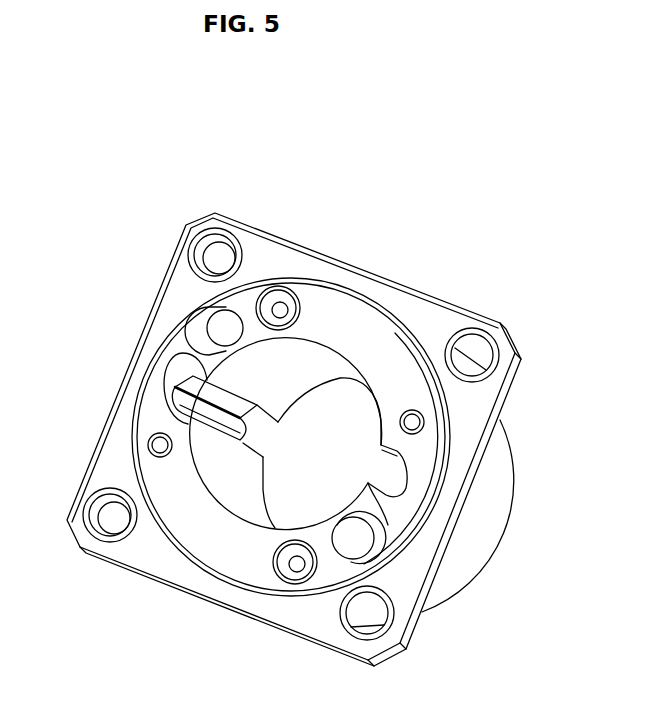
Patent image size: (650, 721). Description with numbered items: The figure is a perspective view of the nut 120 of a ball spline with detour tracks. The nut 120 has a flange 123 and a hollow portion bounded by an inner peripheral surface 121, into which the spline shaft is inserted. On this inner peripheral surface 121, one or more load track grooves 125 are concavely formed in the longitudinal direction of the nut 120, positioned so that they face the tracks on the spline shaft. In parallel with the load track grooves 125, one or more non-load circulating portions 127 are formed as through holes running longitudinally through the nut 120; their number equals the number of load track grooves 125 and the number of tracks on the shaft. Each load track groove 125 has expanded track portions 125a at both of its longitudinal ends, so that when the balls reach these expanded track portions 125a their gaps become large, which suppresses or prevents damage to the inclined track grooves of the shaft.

The nut 120 is at (316, 182).
The inner peripheral surface 121 is at (245, 502).
The flange 123 is at (417, 311).
The load track groove 125 is at (197, 426).
The expanded track portion 125a is at (175, 383).
The non-load circulating portion 127 is at (223, 323).